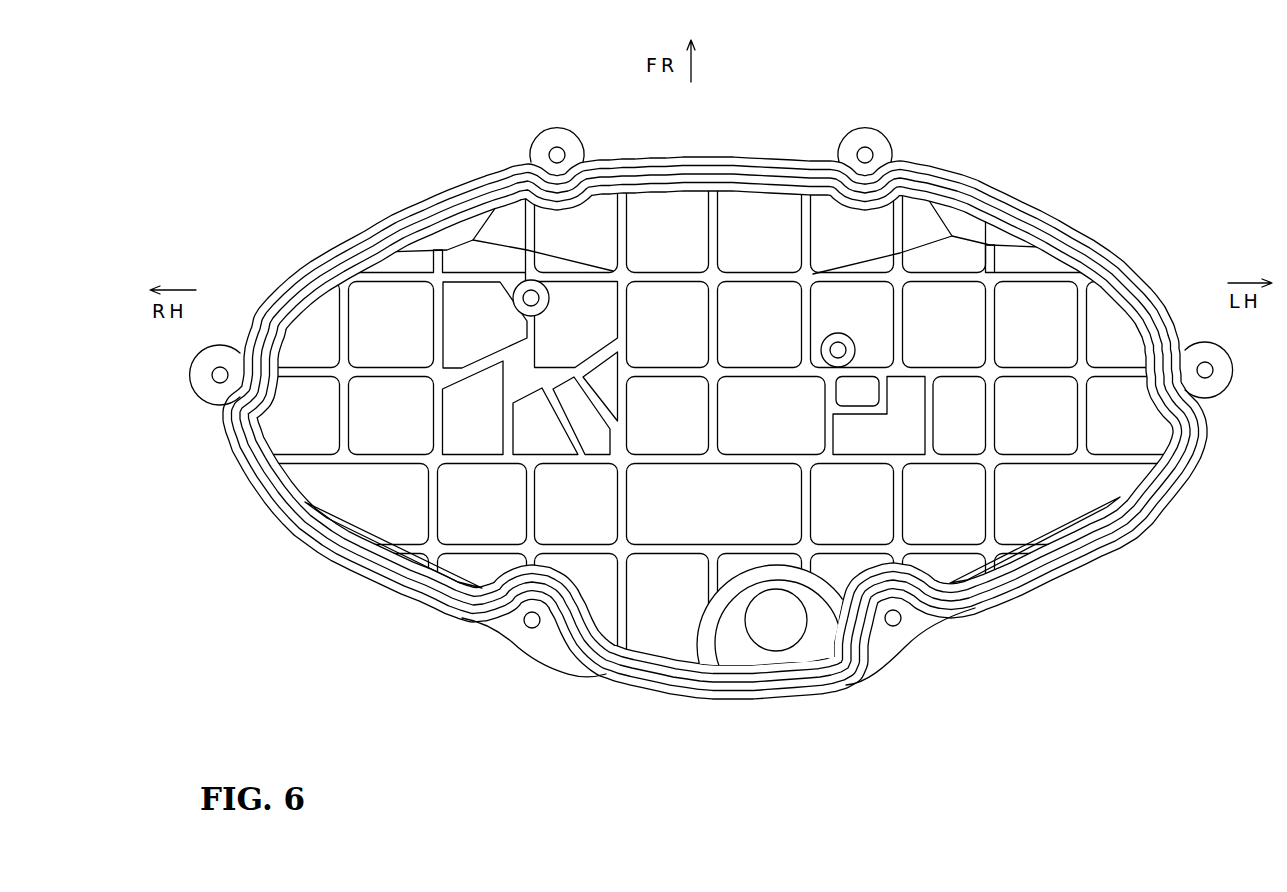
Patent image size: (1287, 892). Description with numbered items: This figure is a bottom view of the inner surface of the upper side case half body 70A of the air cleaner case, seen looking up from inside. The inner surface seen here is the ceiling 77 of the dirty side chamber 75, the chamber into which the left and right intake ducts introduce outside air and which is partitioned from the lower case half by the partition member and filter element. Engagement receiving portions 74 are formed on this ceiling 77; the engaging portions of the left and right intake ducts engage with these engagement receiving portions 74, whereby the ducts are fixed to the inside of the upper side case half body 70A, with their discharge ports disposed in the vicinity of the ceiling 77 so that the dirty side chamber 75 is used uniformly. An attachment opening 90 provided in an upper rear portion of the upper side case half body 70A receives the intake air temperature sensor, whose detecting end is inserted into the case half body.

The upper side case half body 70A is at (1076, 212).
The engagement receiving portions 74 is at (524, 282).
The dirty side chamber 75 is at (677, 517).
The ceiling 77 is at (765, 334).
The attachment opening 90 is at (762, 637).